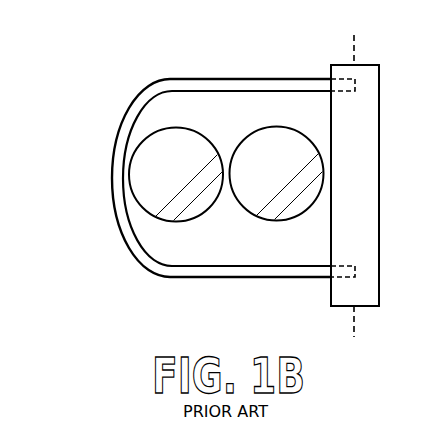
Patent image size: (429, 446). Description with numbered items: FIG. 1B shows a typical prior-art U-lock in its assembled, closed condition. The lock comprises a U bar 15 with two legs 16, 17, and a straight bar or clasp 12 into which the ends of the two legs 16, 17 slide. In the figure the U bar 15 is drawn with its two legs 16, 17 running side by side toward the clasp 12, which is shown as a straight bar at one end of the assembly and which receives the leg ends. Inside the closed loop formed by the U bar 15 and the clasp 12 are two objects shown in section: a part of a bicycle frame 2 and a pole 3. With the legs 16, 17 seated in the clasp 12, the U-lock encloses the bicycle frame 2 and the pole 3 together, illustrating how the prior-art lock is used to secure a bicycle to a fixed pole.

The bicycle frame 2 is at (175, 274).
The pole 3 is at (275, 274).
The clasp 12 is at (357, 203).
The U bar 15 is at (113, 207).
The leg 16 is at (212, 266).
The leg 17 is at (253, 91).